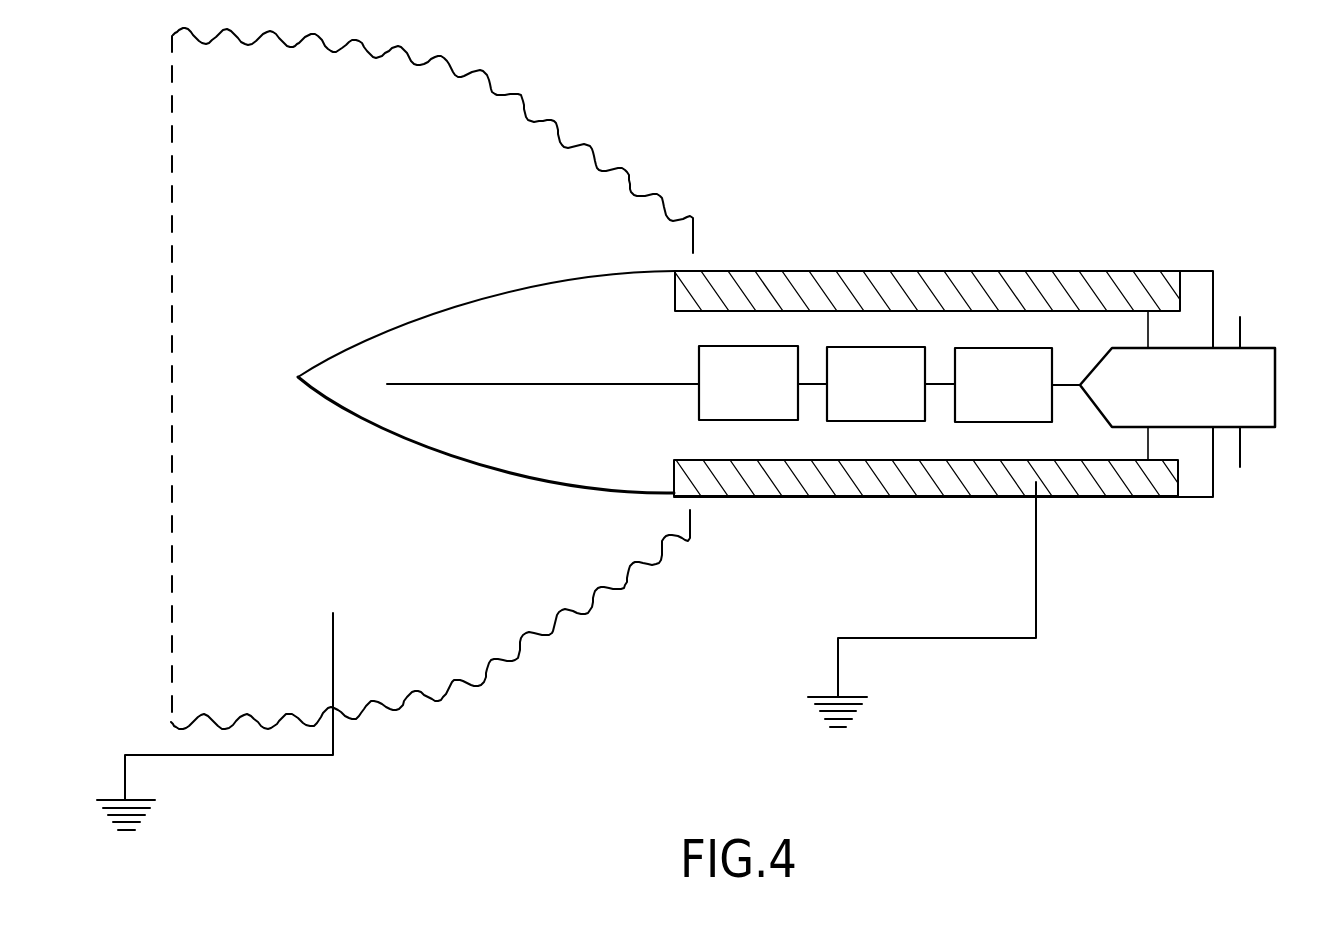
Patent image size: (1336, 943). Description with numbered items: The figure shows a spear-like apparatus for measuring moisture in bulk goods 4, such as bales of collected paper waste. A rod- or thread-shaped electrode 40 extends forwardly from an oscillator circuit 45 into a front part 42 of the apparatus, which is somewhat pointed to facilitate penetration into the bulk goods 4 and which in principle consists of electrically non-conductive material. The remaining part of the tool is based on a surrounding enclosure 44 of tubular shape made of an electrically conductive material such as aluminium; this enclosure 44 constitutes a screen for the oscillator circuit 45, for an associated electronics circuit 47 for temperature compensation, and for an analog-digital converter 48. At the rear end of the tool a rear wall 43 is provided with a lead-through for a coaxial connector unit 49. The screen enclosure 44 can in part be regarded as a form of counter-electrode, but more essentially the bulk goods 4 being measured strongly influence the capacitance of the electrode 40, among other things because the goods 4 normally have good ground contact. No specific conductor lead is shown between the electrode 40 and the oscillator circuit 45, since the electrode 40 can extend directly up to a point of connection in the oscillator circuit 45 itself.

The bulk goods 4 is at (428, 672).
The electrode 40 is at (570, 378).
The front part 42 is at (512, 288).
The rear wall 43 is at (1192, 273).
The surrounding enclosure 44 is at (1108, 500).
The oscillator circuit 45 is at (720, 345).
The electronics circuit for temperature compensation 47 is at (845, 345).
The analog-digital converter 48 is at (970, 347).
The coaxial connector unit 49 is at (1262, 348).